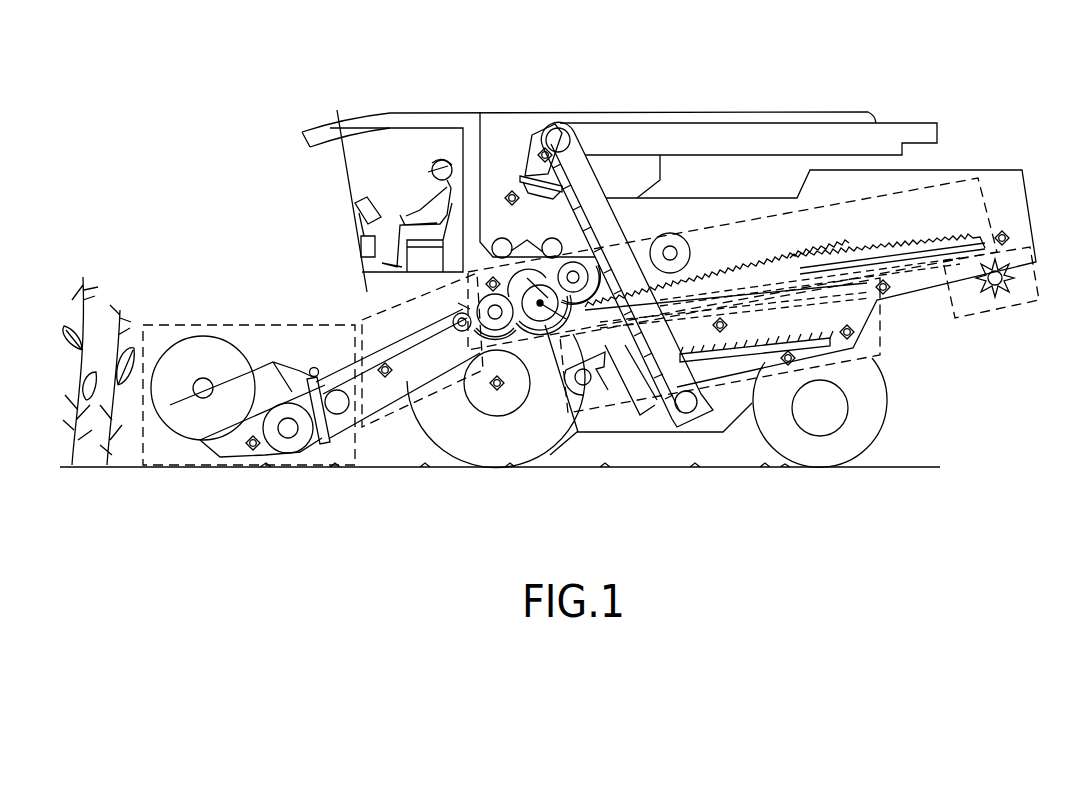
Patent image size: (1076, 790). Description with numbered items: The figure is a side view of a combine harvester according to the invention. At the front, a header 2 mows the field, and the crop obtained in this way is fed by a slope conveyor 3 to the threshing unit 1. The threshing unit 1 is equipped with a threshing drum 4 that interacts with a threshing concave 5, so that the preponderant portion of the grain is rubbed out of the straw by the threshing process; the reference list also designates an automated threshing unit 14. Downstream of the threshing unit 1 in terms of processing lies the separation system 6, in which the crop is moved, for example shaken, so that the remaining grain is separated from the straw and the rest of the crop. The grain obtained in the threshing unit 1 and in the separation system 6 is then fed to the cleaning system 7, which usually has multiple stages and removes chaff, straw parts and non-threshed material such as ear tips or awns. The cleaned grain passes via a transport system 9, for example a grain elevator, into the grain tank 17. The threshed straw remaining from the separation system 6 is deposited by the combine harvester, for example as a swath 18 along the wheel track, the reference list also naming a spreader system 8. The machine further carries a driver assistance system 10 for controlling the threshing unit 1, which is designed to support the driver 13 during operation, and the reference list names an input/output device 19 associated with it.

The threshing unit 1 is at (470, 285).
The header 2 is at (197, 323).
The slope conveyor 3 is at (400, 435).
The threshing drum 4 is at (578, 333).
The threshing concave 5 is at (548, 340).
The separation system 6 is at (837, 200).
The cleaning system 7 is at (880, 330).
The spreader system 8 is at (975, 316).
The transport system 9 is at (633, 227).
The driver assistance system 10 is at (350, 234).
The driver 13 is at (437, 163).
The automated threshing unit 14 is at (538, 345).
The grain tank 17 is at (512, 196).
The swath 18 is at (1003, 236).
The input/output device 19 is at (337, 110).